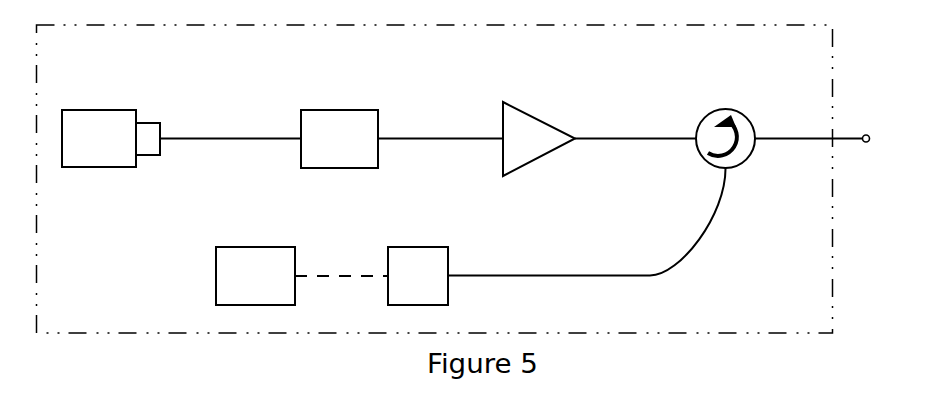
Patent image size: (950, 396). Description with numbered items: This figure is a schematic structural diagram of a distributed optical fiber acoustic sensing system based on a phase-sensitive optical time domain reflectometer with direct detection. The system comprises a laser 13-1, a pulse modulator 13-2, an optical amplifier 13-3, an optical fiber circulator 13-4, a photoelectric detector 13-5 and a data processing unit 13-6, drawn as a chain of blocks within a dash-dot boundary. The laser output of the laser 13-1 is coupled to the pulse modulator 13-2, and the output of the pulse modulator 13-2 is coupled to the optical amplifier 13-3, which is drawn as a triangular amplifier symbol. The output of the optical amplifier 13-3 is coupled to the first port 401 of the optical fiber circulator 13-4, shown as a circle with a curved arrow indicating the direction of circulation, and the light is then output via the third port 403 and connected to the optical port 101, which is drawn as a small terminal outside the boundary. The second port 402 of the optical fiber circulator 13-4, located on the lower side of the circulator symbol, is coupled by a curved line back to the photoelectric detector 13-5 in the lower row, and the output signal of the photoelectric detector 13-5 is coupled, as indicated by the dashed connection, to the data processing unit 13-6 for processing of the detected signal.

The laser 13-1 is at (80, 110).
The pulse modulator 13-2 is at (395, 107).
The optical amplifier 13-3 is at (567, 107).
The optical fiber circulator 13-4 is at (715, 105).
The photoelectric detector 13-5 is at (417, 247).
The data processing unit 13-6 is at (228, 247).
The first port 401 is at (635, 126).
The second port 402 is at (706, 222).
The third port 403 is at (808, 126).
The optical port 101 is at (893, 140).